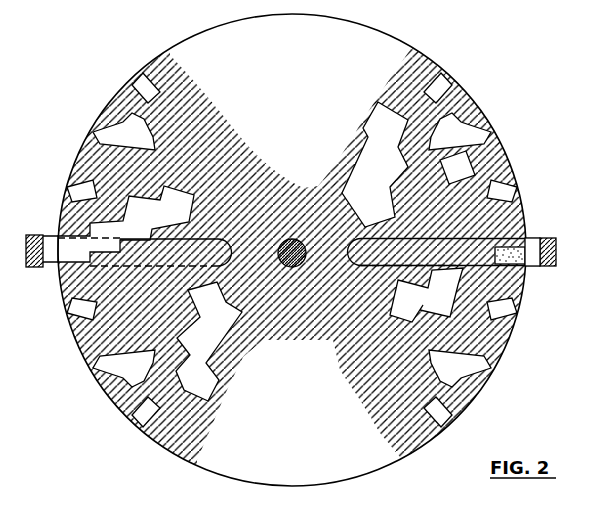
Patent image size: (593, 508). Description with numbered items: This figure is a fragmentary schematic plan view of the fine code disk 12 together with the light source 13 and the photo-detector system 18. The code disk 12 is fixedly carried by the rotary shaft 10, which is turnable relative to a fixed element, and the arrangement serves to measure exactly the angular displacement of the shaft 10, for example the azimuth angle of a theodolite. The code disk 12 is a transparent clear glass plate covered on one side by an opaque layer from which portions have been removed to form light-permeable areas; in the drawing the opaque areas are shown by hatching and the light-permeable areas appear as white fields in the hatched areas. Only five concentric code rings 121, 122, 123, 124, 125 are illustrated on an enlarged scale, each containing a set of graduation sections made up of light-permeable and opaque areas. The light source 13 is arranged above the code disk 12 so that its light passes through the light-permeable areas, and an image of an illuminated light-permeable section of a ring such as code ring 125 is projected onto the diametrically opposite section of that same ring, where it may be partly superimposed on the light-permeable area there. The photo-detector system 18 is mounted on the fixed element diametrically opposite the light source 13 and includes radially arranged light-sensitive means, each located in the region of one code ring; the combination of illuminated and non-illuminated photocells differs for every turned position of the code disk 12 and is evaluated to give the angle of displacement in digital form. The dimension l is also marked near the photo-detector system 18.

The rotary shaft 10 is at (294, 268).
The fine code disk 12 is at (485, 157).
The light source 13 is at (53, 257).
The photo-detector system 18 is at (536, 257).
The clearance gap l is at (531, 240).
The code ring 121 is at (292, 162).
The code ring 122 is at (292, 129).
The code ring 123 is at (292, 97).
The code ring 124 is at (265, 68).
The code ring 125 is at (292, 32).